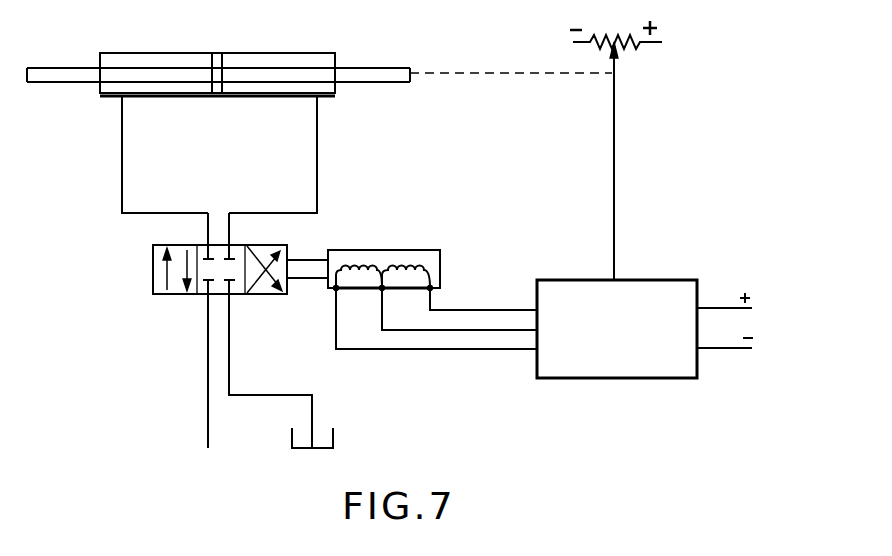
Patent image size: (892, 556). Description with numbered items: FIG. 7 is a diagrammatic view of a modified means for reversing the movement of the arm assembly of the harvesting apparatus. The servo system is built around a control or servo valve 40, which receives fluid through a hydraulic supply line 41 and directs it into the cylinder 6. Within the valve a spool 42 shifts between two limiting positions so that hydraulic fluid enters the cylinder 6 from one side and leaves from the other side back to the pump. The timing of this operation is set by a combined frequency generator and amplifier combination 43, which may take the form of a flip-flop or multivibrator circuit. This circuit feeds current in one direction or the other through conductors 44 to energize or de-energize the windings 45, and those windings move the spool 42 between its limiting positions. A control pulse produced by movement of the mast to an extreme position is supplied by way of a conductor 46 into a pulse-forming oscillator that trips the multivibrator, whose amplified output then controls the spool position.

The cylinder 6 is at (333, 62).
The control or servo valve 40 is at (162, 277).
The hydraulic supply line 41 is at (206, 414).
The spool 42 is at (262, 293).
The frequency generator and amplifier combination 43 is at (697, 281).
The conductors 44 is at (409, 350).
The windings 45 is at (429, 253).
The conductor 46 is at (623, 228).